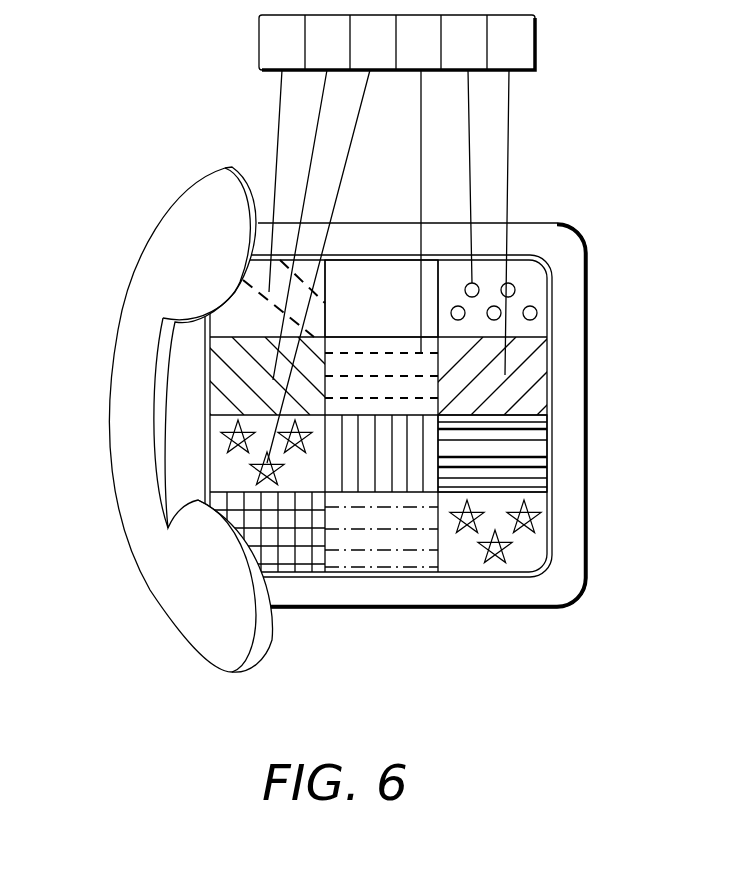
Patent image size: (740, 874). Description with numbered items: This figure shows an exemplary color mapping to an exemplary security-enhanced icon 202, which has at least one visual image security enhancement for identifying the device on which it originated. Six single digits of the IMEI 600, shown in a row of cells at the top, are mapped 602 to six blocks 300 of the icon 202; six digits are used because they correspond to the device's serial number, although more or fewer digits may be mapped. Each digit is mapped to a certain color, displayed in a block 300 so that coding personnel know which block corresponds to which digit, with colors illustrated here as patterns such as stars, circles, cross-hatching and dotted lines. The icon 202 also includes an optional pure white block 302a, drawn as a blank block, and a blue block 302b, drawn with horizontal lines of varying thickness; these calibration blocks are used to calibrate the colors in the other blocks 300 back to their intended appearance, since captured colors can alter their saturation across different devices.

The IMEI 600 is at (259, 42).
The mapping 602 is at (548, 152).
The security-enhanced icon 202 is at (232, 166).
The block 300 is at (247, 298).
The pure white block 302a is at (385, 273).
The blue block 302b is at (527, 460).